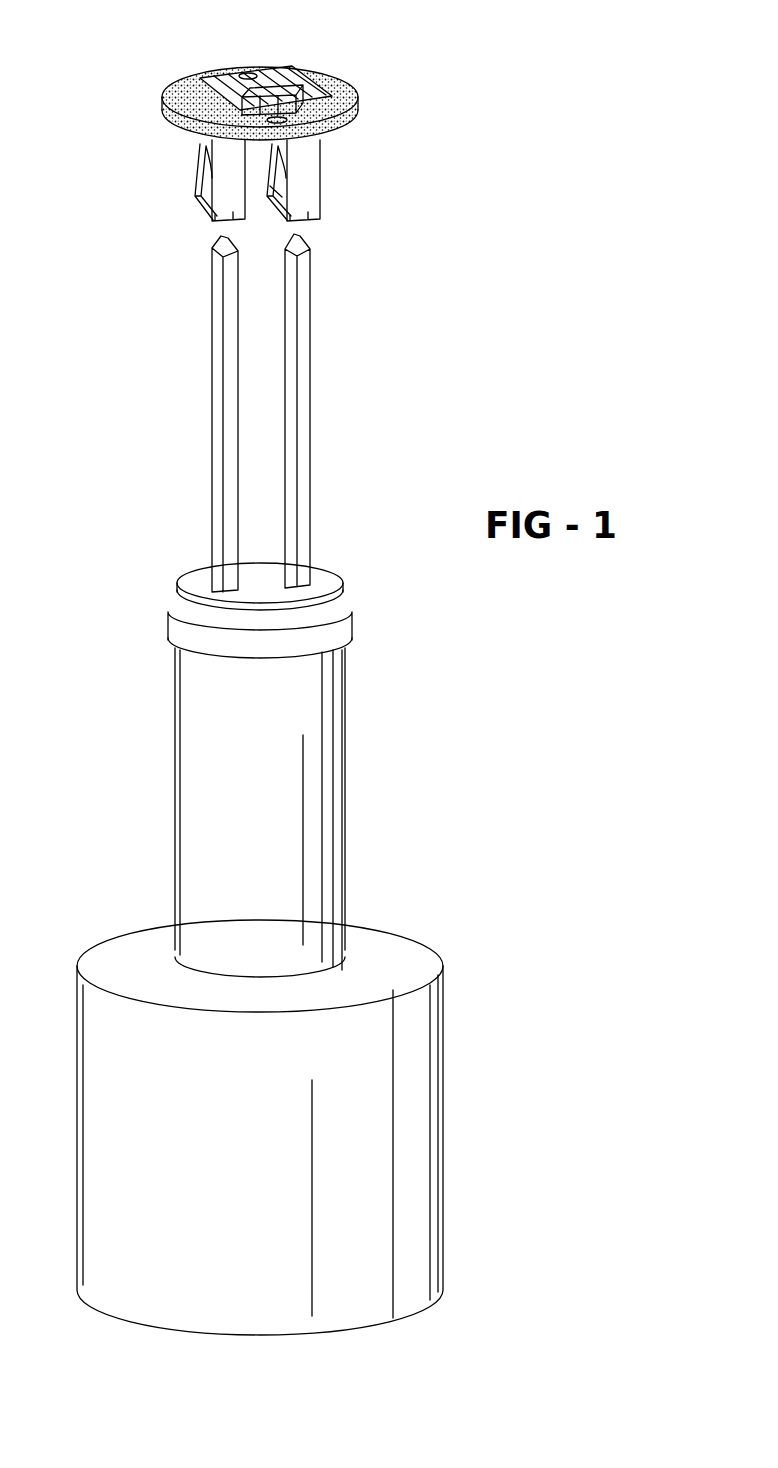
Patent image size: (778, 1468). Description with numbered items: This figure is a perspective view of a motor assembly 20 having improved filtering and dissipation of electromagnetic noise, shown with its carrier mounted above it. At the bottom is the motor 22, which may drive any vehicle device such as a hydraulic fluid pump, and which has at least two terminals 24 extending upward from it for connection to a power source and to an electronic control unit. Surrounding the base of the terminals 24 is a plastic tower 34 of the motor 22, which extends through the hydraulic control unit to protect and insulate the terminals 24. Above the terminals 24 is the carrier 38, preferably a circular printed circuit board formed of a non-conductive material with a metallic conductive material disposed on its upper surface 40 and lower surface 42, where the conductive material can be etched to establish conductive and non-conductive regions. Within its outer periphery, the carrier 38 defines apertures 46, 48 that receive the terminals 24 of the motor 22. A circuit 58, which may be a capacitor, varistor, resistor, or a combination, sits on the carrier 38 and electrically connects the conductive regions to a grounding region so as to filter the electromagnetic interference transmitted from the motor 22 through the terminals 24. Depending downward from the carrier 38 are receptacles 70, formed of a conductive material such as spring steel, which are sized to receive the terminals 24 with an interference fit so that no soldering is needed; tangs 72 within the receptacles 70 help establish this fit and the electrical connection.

The assembly 20 is at (82, 570).
The motor 22 is at (435, 1065).
The terminals 24 is at (218, 386).
The plastic tower 34 is at (333, 743).
The carrier 38 is at (355, 121).
The upper surface 40 is at (172, 122).
The lower surface 42 is at (343, 82).
The aperture 46 is at (196, 82).
The aperture 48 is at (297, 96).
The circuit 58 is at (262, 71).
The receptacles 70 is at (307, 170).
The tangs 72 is at (199, 177).